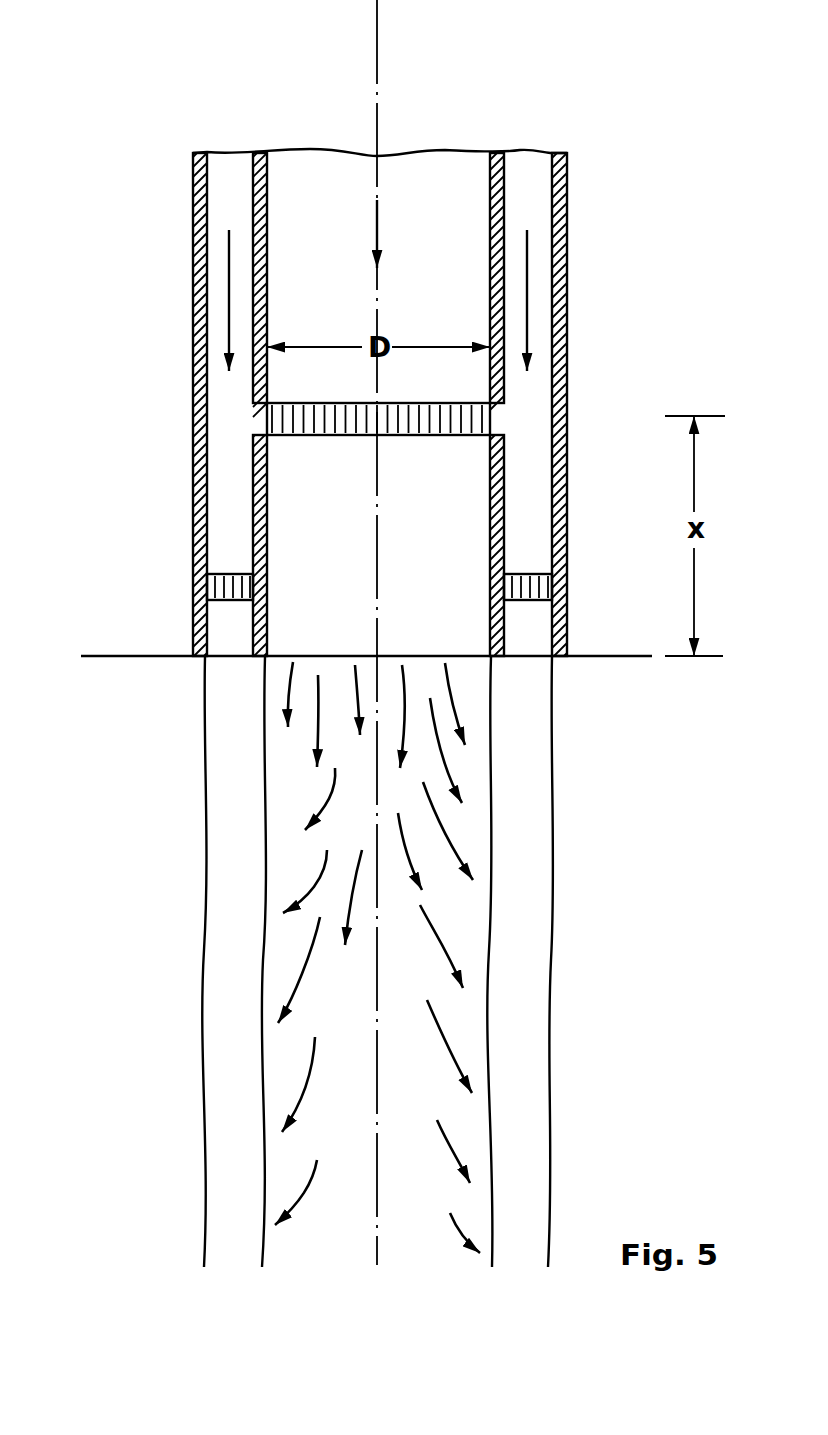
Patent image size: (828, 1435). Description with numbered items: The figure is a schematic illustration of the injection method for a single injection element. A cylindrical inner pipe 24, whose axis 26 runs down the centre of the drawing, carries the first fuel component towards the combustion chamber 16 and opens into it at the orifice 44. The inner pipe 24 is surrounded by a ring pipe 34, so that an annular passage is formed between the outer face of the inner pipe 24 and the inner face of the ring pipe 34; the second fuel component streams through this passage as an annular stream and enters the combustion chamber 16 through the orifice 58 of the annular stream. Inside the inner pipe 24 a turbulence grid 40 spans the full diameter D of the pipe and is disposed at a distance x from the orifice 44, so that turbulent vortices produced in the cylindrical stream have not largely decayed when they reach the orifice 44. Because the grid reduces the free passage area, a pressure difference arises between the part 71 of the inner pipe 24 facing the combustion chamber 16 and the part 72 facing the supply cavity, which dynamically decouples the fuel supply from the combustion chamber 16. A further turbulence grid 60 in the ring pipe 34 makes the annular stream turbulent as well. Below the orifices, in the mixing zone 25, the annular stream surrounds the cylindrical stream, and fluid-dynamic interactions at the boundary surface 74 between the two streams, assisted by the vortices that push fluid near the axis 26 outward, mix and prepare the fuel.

The combustion chamber 16 is at (649, 812).
The inner pipe 24 is at (450, 156).
The mixing zone 25 is at (560, 1022).
The axis 26 is at (378, 116).
The ring pipe 34 is at (219, 433).
The turbulence grid 40 is at (483, 418).
The orifice 44 is at (417, 657).
The orifice of the annular stream 58 is at (232, 657).
The turbulence grid 60 is at (543, 585).
The part of the inner pipe facing the combustion chamber 71 is at (288, 537).
The part of the inner pipe facing the cavity 72 is at (287, 216).
The boundary surface 74 is at (487, 931).